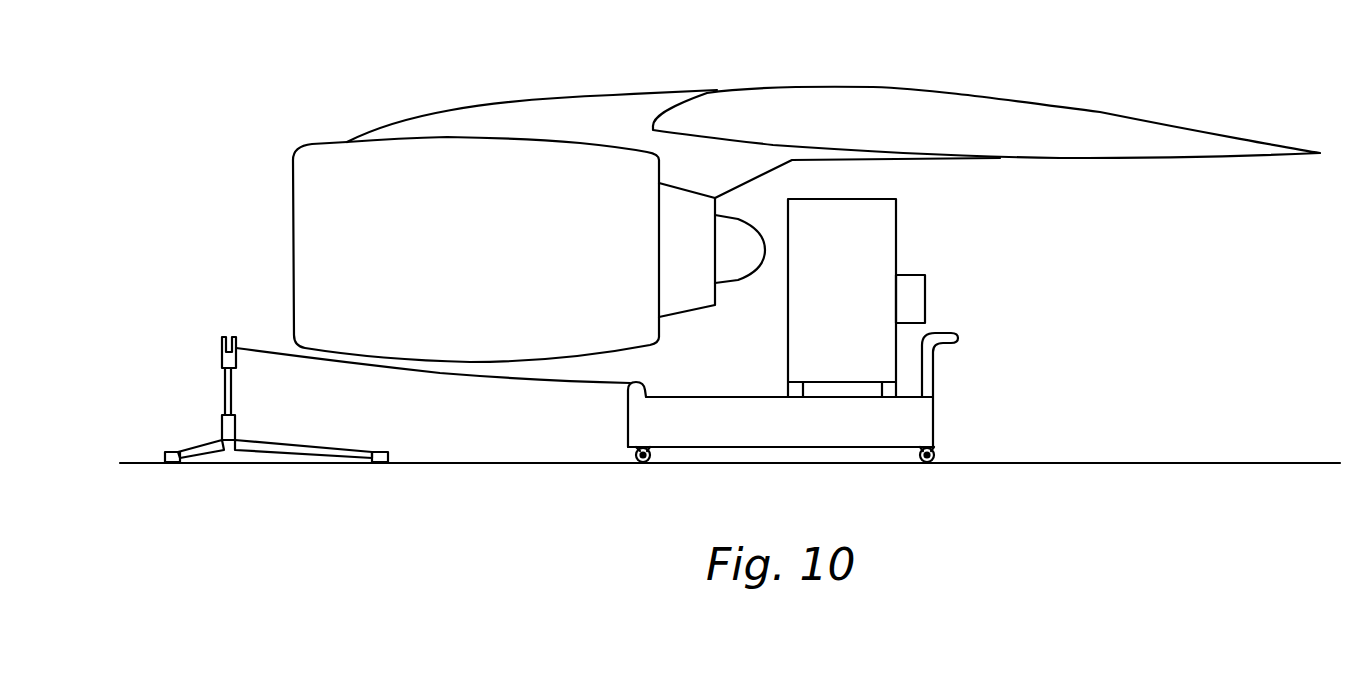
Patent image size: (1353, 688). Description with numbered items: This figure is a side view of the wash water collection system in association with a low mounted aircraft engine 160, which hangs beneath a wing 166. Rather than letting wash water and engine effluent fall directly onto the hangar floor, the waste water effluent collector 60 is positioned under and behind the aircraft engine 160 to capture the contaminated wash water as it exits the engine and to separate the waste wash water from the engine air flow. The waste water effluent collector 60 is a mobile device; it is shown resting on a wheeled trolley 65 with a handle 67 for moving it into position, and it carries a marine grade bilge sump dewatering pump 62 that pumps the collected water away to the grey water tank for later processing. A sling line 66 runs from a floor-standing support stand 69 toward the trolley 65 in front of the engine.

The wing 166 is at (875, 88).
The aircraft engine 160 is at (292, 252).
The marine grade bilge (sump) dewatering pump 62 is at (897, 222).
The waste water effluent collector 60 is at (963, 275).
The handle 67 is at (961, 337).
The trolley 65 is at (628, 417).
The sling line 66 is at (460, 375).
The support stand 69 is at (235, 391).